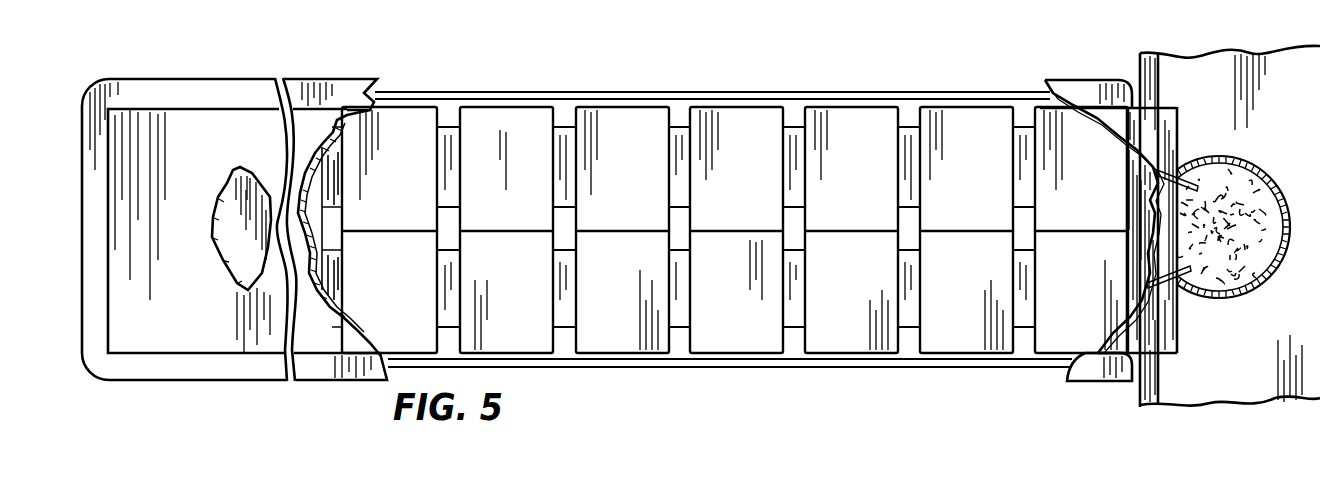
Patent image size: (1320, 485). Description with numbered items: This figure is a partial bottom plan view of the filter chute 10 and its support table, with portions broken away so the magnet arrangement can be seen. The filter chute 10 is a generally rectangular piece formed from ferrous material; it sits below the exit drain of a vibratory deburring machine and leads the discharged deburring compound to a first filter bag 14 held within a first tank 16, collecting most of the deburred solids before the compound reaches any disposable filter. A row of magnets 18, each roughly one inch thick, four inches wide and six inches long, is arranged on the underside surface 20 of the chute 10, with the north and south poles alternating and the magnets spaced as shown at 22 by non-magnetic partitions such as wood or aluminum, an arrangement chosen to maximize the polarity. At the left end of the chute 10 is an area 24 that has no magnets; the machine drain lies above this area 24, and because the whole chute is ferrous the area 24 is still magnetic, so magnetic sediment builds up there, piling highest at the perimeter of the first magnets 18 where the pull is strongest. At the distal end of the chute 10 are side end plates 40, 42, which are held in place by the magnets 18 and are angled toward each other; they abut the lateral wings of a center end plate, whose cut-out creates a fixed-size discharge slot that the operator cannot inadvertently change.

The filter chute 10 is at (752, 370).
The first filter bag 14 is at (1268, 185).
The first tank 16 is at (1267, 70).
The magnets 18 is at (540, 257).
The underside surface 20 is at (243, 183).
The spacing 22 is at (678, 143).
The area 24 is at (254, 234).
The side end plate 40 is at (1177, 137).
The side end plate 42 is at (1177, 306).